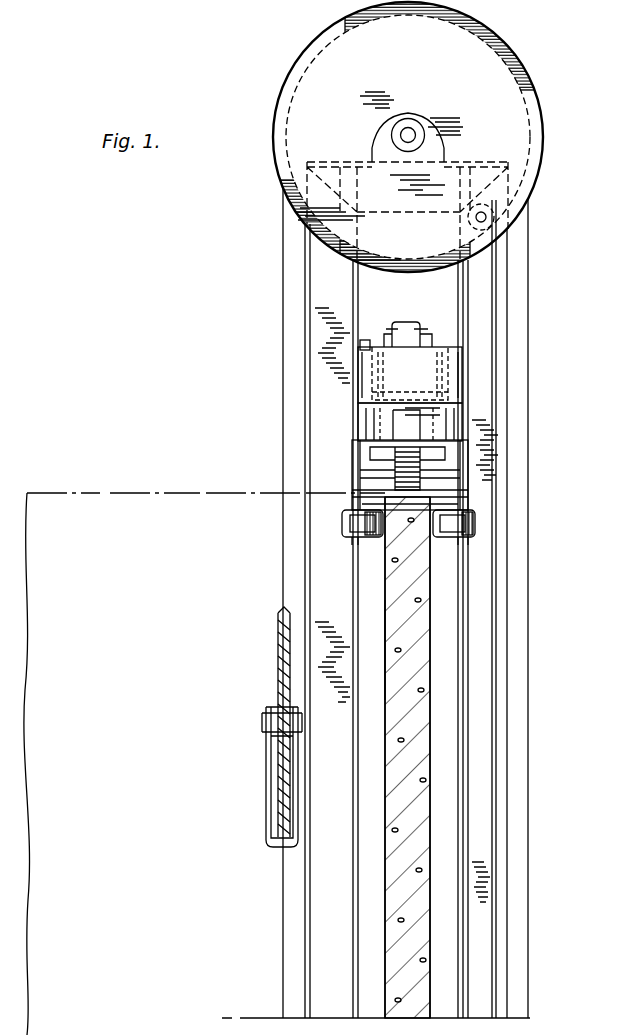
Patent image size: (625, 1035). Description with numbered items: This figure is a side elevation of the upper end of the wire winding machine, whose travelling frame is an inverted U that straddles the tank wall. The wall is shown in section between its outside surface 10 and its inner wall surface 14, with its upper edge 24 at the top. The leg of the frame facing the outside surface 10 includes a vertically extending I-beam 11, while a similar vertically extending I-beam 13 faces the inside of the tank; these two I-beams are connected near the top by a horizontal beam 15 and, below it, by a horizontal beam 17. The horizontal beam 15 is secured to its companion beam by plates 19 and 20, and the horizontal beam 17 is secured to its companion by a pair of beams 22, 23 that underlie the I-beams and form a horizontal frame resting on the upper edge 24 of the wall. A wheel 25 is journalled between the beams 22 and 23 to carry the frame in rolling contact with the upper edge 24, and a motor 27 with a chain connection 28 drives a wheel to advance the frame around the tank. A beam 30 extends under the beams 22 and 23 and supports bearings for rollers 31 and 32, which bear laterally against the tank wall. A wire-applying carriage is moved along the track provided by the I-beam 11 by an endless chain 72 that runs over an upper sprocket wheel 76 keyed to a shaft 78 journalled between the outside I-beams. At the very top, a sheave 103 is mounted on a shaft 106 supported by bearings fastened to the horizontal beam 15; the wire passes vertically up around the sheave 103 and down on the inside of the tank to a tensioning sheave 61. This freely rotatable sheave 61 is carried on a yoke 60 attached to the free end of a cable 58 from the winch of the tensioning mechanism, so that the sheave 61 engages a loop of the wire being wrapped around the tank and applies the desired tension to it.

The sheave 103 is at (330, 70).
The shaft 106 is at (411, 132).
The horizontal beam 15 is at (403, 197).
The plate 20 is at (340, 158).
The plate 19 is at (505, 143).
The shaft 78 is at (500, 204).
The upper sprocket wheel 76 is at (494, 227).
The cable 58 is at (281, 887).
The I-beam 13 is at (312, 935).
The endless chain 72 is at (497, 626).
The I-beam 11 is at (500, 944).
The motor 27 is at (401, 325).
The chain connection 28 is at (385, 320).
The horizontal beam 17 is at (440, 352).
The beam 23 is at (355, 420).
The beam 22 is at (465, 421).
The upper edge 24 is at (372, 494).
The beam 30 is at (470, 462).
The wheel 25 is at (455, 474).
The roller 32 is at (340, 522).
The roller 31 is at (474, 522).
The outside surface 10 is at (432, 768).
The inner wall surface 14 is at (383, 866).
The sheave 61 is at (277, 665).
The yoke 60 is at (266, 800).